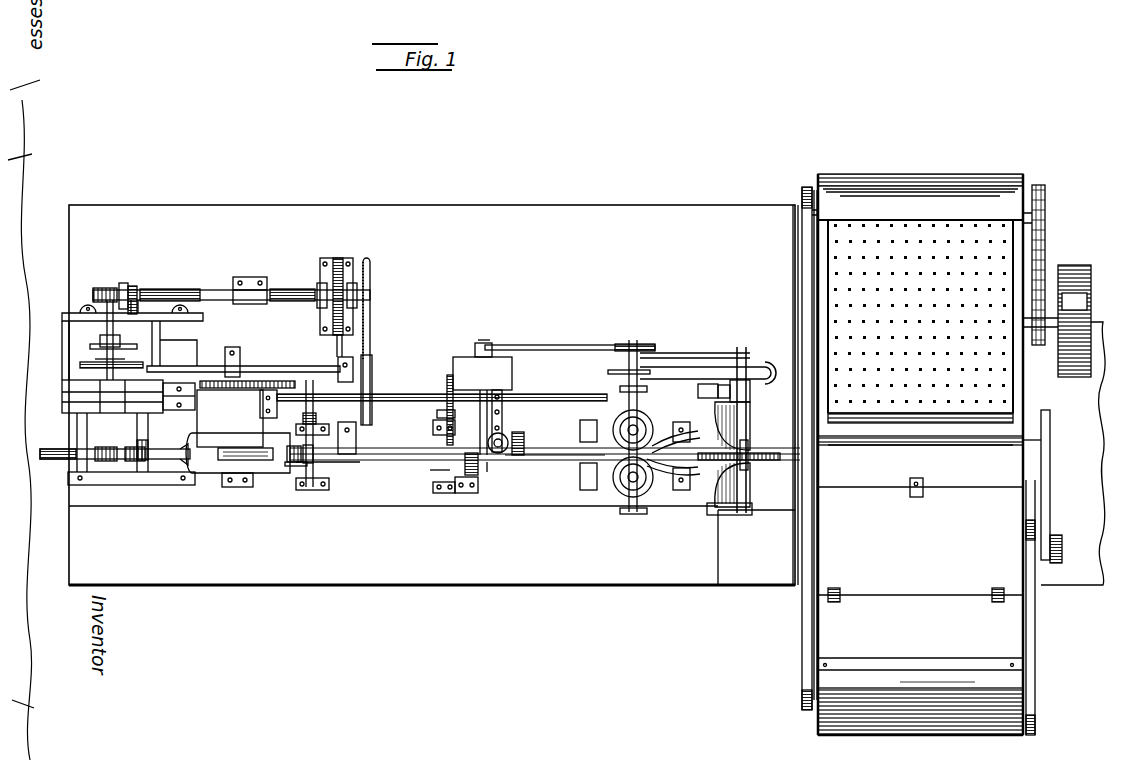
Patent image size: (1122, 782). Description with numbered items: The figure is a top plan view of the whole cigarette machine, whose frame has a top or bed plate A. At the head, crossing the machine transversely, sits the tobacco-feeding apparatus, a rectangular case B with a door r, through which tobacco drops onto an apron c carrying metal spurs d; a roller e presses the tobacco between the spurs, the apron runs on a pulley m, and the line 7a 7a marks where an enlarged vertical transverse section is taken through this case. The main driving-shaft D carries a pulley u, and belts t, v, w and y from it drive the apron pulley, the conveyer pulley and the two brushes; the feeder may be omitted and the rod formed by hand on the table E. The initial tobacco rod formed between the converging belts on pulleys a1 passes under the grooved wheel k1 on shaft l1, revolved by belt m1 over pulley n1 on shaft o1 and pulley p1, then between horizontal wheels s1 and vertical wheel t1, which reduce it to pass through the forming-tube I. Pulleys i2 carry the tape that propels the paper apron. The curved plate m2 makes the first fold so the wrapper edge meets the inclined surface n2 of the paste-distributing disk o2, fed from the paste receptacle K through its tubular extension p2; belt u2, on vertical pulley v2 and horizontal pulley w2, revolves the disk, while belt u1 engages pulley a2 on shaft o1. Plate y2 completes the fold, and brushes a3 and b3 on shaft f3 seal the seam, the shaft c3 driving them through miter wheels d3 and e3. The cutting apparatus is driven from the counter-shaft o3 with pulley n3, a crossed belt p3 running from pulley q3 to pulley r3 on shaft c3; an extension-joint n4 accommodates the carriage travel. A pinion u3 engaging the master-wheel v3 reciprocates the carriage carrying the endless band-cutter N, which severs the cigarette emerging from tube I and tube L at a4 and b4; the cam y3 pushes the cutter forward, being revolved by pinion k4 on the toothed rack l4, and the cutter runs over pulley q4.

The top or bed plate A is at (433, 395).
The rectangular case B is at (920, 454).
The main driving-shaft D is at (1050, 345).
The table E is at (1073, 453).
The paste receptacle K is at (470, 372).
The tube L is at (227, 448).
The continuous band-cutter N is at (113, 452).
The forming-tube I is at (450, 468).
The section line 7a is at (920, 174).
The belt t is at (1046, 244).
The pulley u is at (1080, 268).
The belt y is at (1050, 482).
The belt w is at (1036, 636).
The door r is at (920, 518).
The roller e is at (920, 429).
The apron c is at (855, 290).
The metal spurs d is at (855, 307).
The belt v is at (802, 264).
The pinion k4 is at (114, 292).
The toothed rack l4 is at (106, 289).
The extension-joint n4 is at (172, 292).
The counter-shaft o3 is at (300, 300).
The pulley n3 is at (336, 258).
The pulley q3 is at (370, 262).
The crossed belt p3 is at (372, 360).
The pulley r3 is at (385, 397).
The miter gear-wheels d3 is at (449, 394).
The miter gear-wheels e3 is at (304, 425).
The shaft c3 is at (363, 438).
The master-wheel v3 is at (252, 381).
The pinion u3 is at (288, 381).
The belt u2 is at (330, 464).
The cam y3 is at (93, 346).
The pulley q4 is at (100, 375).
The pulley m is at (70, 413).
The severing point b4 is at (78, 460).
The severing point a4 is at (143, 470).
The pulleys i2 is at (215, 465).
The brush a3 is at (292, 452).
The vertical pulley v2 is at (306, 455).
The shaft f3 is at (300, 466).
The brush b3 is at (475, 462).
The inclined surface n2 is at (492, 465).
The horizontal pulley w2 is at (590, 490).
The vertical wheel t1 is at (640, 470).
The horizontal wheels s1 is at (620, 420).
The pulley p1 is at (750, 347).
The pulleys a1 is at (700, 400).
The folding plate y2 is at (487, 465).
The grooved wheel k1 is at (765, 457).
The paste-distributing disk o2 is at (502, 435).
The curved folding plate m2 is at (525, 452).
The shaft o1 is at (622, 377).
The belt m1 is at (691, 386).
The pulley a2 is at (620, 344).
The pulley n1 is at (637, 345).
The tubular extension p2 is at (568, 345).
The belt u1 is at (714, 357).
The shaft l1 is at (770, 382).